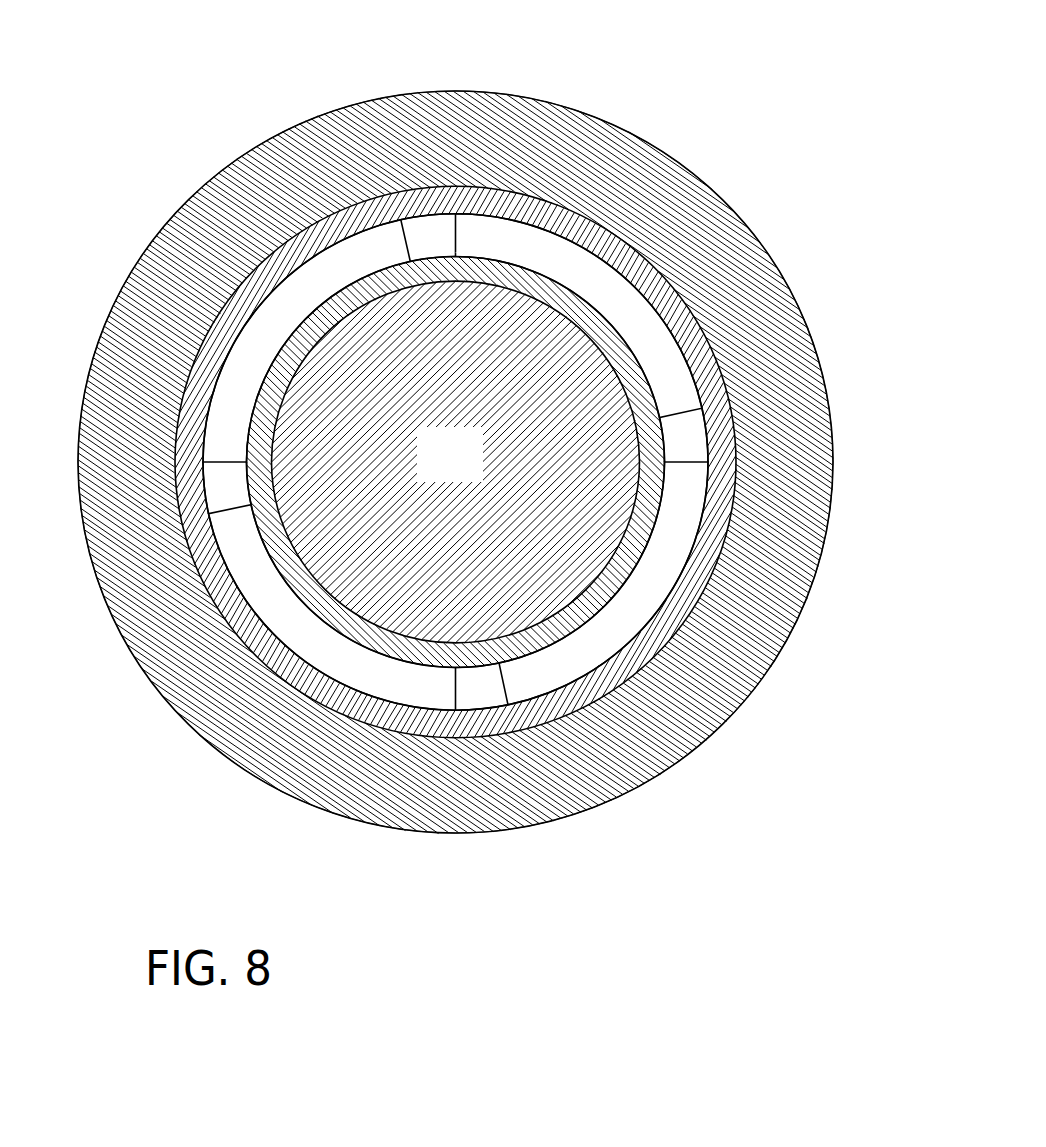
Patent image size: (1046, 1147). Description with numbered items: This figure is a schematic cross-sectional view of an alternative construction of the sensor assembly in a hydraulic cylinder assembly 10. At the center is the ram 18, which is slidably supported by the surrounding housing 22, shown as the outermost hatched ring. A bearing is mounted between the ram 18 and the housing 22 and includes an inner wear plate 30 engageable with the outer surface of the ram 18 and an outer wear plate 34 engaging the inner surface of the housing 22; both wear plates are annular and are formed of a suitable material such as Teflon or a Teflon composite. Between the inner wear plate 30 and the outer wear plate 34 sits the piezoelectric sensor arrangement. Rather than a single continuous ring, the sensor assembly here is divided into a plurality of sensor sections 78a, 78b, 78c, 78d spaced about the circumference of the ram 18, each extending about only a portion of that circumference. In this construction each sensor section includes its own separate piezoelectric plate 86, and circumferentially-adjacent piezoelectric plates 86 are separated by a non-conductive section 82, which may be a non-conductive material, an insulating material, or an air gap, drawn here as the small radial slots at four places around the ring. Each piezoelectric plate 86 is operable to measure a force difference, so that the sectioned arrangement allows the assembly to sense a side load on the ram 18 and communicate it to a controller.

The hydraulic cylinder assembly 10 is at (177, 170).
The housing 22 is at (260, 145).
The outer wear plate 34 is at (658, 662).
The inner wear plate 30 is at (557, 640).
The ram 18 is at (466, 467).
The sensor section 78a is at (607, 288).
The sensor section 78b is at (648, 575).
The sensor section 78c is at (308, 625).
The sensor section 78d is at (268, 330).
The non-conductive section 82 is at (428, 242).
The piezoelectric plate 86 is at (515, 250).